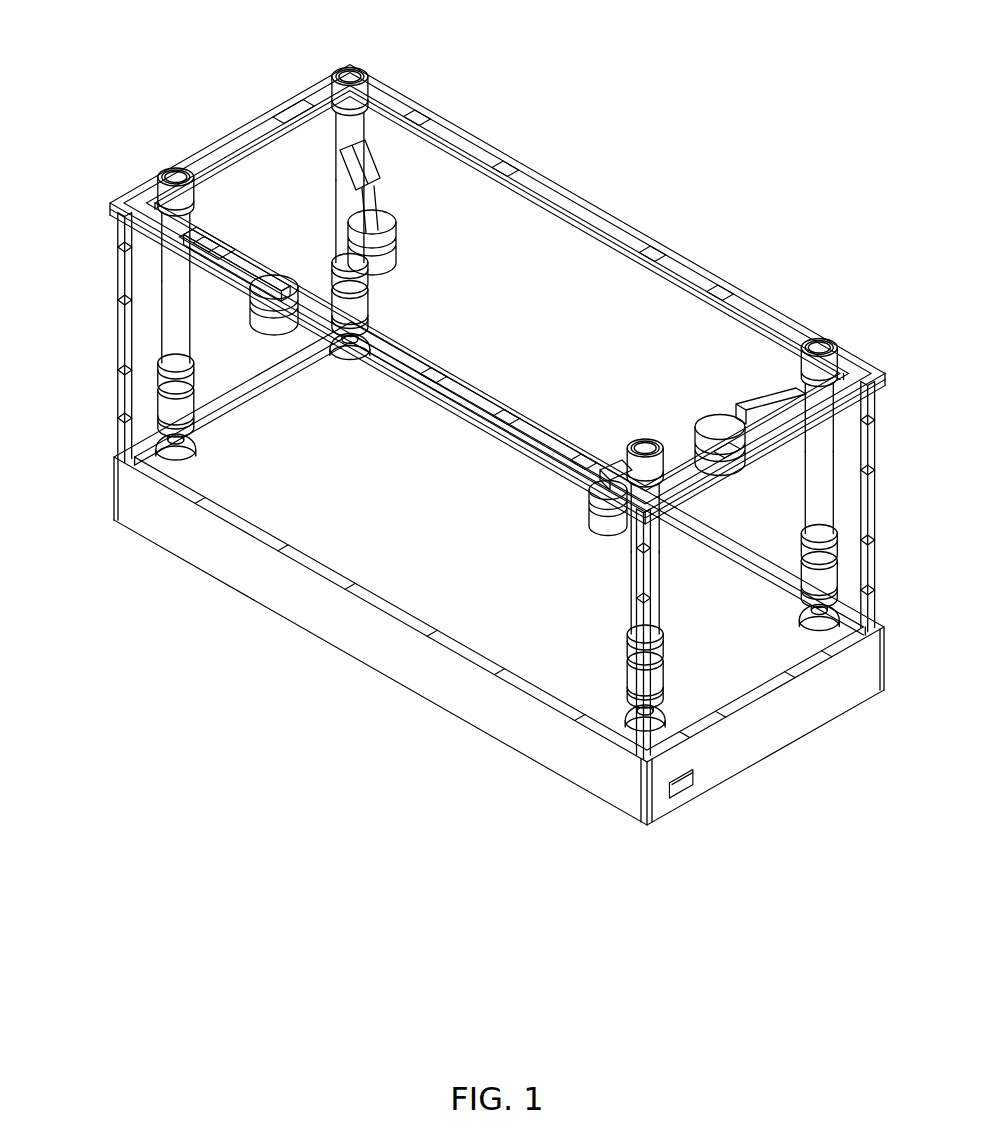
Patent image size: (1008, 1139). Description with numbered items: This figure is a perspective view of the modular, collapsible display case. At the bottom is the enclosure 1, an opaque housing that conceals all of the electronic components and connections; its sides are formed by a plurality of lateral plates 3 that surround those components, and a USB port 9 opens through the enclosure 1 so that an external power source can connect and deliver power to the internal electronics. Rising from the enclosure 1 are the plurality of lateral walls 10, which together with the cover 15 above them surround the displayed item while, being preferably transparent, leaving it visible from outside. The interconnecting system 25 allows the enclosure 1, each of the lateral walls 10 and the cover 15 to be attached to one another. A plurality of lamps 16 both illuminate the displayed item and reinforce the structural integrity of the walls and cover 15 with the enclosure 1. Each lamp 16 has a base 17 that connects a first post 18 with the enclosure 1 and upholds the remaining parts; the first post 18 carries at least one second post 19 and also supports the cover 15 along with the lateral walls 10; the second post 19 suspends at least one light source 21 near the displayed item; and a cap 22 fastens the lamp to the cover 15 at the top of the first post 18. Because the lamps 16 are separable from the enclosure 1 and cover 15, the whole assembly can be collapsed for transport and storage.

The enclosure 1 is at (459, 433).
The lateral plate 3 is at (163, 540).
The USB port 9 is at (680, 792).
The lateral wall 10 is at (459, 379).
The cover 15 is at (540, 168).
The lamp 16 is at (320, 213).
The base 17 is at (195, 447).
The first post 18 is at (342, 192).
The second post 19 is at (362, 166).
The light source 21 is at (395, 252).
The cap 22 is at (351, 74).
The interconnecting system 25 is at (110, 422).